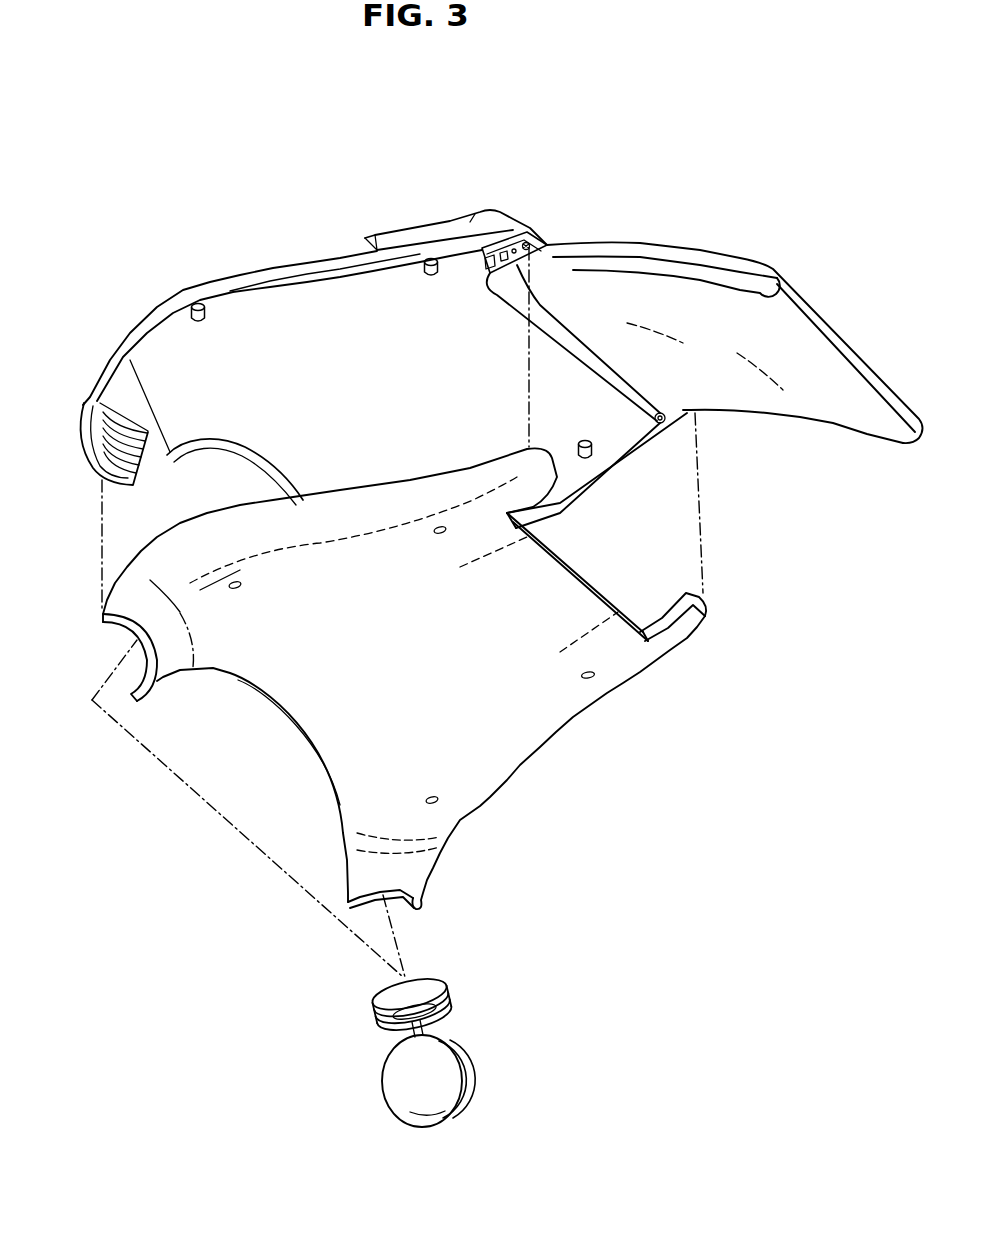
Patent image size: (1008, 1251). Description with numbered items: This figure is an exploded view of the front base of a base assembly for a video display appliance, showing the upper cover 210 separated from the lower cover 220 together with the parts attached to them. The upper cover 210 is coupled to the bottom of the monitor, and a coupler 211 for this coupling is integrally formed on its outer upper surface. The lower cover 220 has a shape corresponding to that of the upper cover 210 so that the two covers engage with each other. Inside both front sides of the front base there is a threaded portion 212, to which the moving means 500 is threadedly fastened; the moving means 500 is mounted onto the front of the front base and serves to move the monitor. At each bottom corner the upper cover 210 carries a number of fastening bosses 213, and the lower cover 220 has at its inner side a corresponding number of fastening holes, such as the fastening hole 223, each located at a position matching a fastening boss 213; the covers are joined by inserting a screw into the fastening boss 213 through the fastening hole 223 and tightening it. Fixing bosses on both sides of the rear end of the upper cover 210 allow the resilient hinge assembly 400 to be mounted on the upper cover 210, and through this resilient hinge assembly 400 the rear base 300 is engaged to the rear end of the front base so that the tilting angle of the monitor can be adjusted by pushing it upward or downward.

The upper cover 210 is at (270, 305).
The coupler 211 is at (433, 228).
The threaded portion 212 is at (92, 466).
The fastening bosses 213 is at (192, 308).
The lower cover 220 is at (550, 710).
The fastening hole 223 is at (591, 679).
The rear base 300 is at (679, 249).
The resilient hinge assembly 400 is at (547, 235).
The moving means 500 is at (478, 1064).